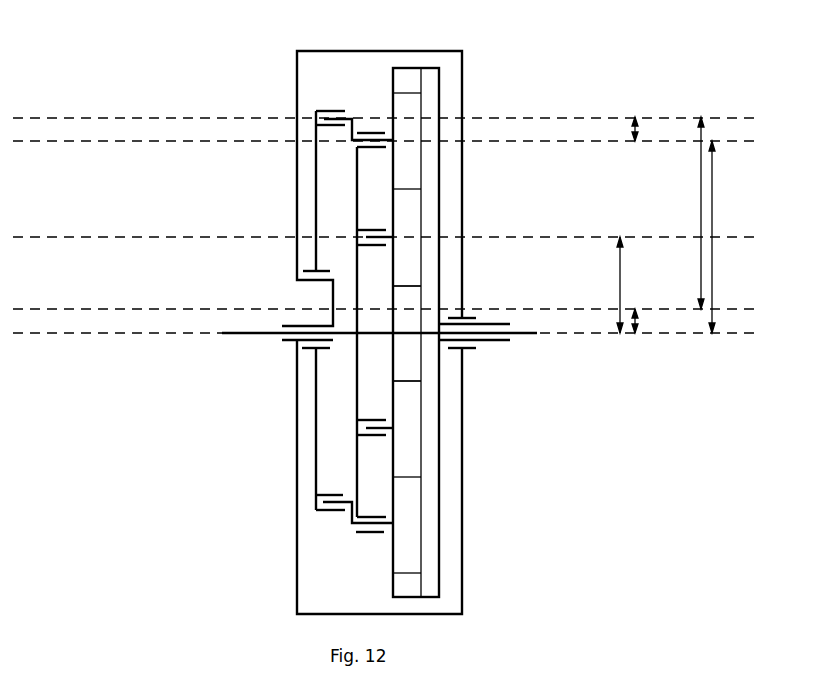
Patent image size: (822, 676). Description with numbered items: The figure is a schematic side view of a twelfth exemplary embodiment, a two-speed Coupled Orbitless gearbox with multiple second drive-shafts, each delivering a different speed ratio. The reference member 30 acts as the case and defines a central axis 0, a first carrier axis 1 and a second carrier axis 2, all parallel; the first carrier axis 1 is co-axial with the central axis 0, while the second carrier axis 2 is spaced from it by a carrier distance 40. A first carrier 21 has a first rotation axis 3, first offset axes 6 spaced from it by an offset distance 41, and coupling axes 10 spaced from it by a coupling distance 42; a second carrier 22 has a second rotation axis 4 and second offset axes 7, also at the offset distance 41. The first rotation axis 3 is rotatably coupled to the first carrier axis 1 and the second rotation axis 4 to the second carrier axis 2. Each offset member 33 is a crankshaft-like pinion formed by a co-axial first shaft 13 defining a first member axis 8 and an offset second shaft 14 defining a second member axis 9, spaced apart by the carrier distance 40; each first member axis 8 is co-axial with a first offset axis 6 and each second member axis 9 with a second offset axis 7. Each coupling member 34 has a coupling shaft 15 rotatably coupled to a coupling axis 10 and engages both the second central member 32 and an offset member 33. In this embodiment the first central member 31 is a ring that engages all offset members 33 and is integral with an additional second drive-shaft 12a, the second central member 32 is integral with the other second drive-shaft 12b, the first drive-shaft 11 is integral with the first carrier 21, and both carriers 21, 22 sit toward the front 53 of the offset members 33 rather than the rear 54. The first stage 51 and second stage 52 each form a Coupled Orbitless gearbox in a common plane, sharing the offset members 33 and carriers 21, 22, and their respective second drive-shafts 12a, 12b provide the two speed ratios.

The central axis 0 is at (385, 359).
The first carrier axis 1 is at (385, 359).
The second carrier axis 2 is at (385, 283).
The first rotation axis 3 is at (75, 333).
The second rotation axis 4 is at (78, 309).
The first offset axis 6 is at (385, 168).
The second offset axis 7 is at (385, 92).
The first member axis 8 is at (78, 141).
The second member axis 9 is at (78, 118).
The coupling axis 10 is at (110, 237).
The first drive-shaft 11 is at (258, 334).
The second drive-shaft 12a is at (490, 323).
The second drive-shaft 12b is at (525, 336).
The first shaft 13 is at (383, 519).
The second shaft 14 is at (328, 497).
The coupling shaft 15 is at (383, 420).
The first carrier 21 is at (356, 180).
The second carrier 22 is at (316, 222).
The reference member 30 is at (320, 612).
The first central member 31 is at (397, 85).
The second central member 32 is at (396, 302).
The offset member 33 is at (397, 120).
The coupling member 34 is at (396, 211).
The carrier distance 40 is at (640, 130).
The offset distance 41 is at (703, 195).
The coupling distance 42 is at (622, 288).
The first stage 51 is at (423, 573).
The second stage 52 is at (423, 428).
The front 53 is at (74, 409).
The rear 54 is at (643, 412).